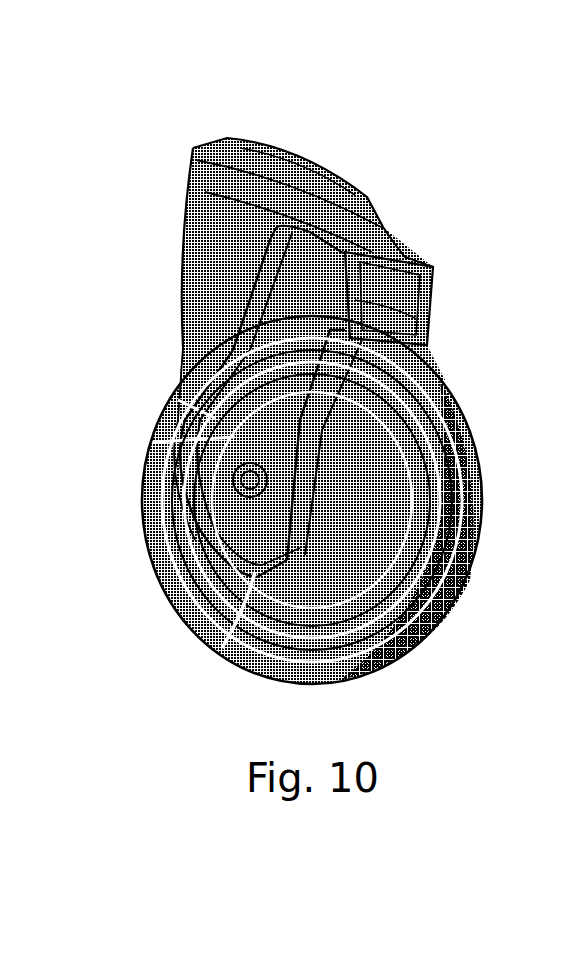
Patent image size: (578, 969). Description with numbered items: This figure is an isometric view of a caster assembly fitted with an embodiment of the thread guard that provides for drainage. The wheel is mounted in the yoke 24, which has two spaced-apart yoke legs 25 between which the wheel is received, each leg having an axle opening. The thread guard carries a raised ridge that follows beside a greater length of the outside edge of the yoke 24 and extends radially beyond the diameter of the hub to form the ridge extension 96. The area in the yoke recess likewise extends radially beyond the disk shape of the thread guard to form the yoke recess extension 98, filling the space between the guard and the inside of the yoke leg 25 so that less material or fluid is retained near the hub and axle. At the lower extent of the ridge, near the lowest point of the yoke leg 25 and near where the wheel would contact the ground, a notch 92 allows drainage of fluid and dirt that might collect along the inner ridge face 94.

The yoke 24 is at (172, 170).
The yoke leg 25 is at (140, 443).
The notch 92 is at (222, 648).
The inner ridge face 94 is at (178, 400).
The ridge extension 96 is at (185, 345).
The yoke recess extension 98 is at (432, 292).